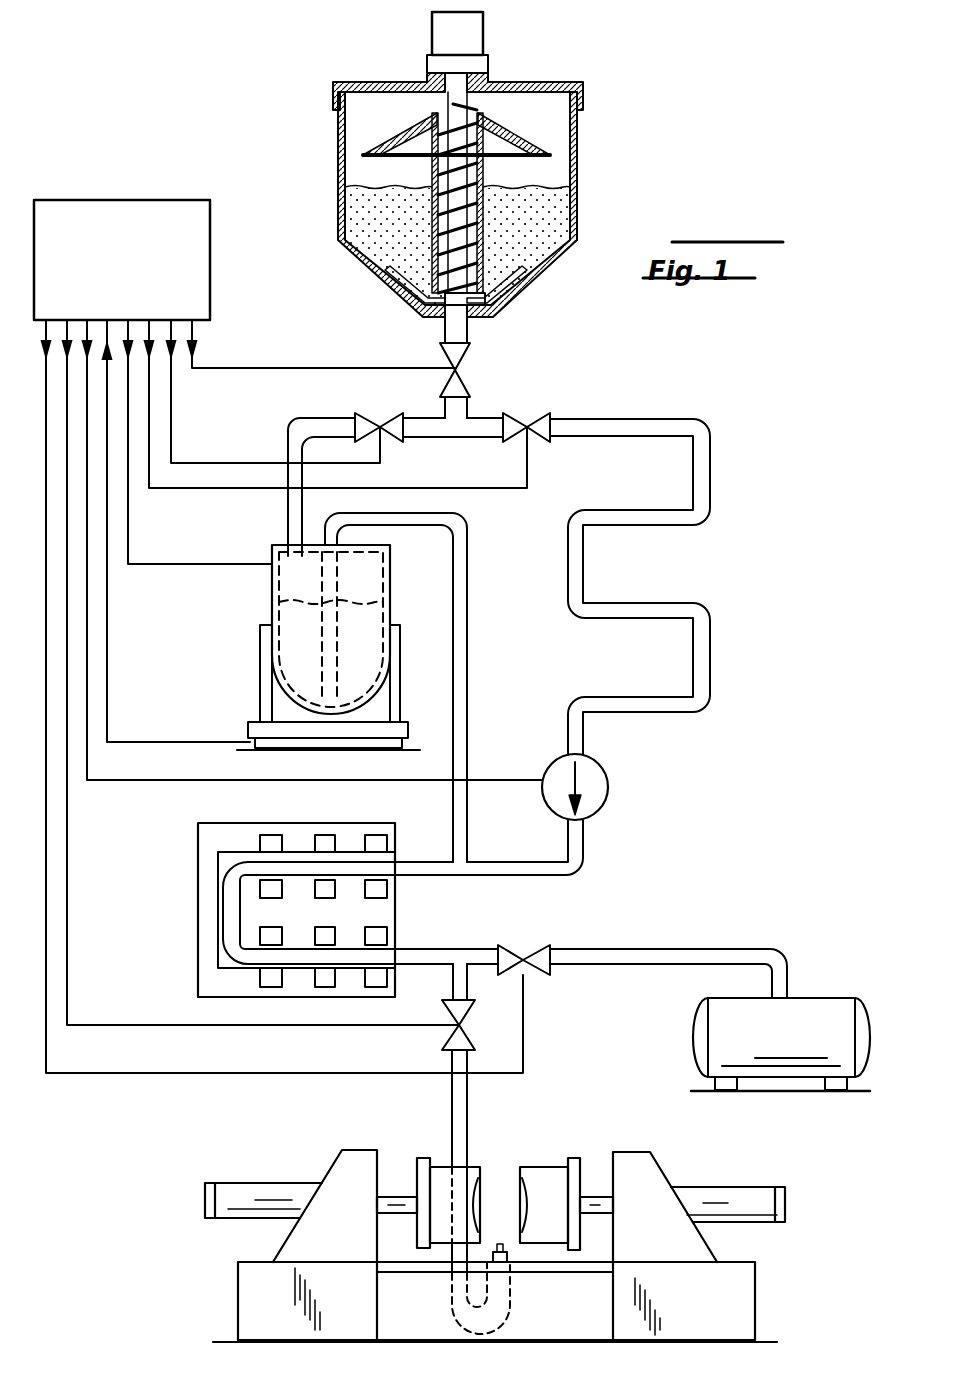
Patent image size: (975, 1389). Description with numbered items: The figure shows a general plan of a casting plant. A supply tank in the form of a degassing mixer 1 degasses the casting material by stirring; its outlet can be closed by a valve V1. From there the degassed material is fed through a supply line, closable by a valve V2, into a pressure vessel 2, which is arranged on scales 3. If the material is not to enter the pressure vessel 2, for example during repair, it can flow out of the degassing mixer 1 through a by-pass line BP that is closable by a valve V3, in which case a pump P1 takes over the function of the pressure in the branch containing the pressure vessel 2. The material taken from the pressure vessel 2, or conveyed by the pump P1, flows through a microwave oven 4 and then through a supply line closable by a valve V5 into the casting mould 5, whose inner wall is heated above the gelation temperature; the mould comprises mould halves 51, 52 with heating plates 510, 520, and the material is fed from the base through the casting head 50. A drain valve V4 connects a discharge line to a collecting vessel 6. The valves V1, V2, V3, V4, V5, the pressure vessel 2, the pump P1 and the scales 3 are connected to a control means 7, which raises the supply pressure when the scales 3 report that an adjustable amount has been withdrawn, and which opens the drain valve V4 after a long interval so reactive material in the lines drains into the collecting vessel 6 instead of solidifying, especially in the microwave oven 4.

The degassing mixer 1 is at (590, 155).
The control means 7 is at (127, 213).
The valve V1 is at (460, 376).
The valve V2 is at (375, 413).
The valve V3 is at (545, 415).
The drain valve V4 is at (540, 947).
The valve V5 is at (463, 1038).
The by-pass line BP is at (705, 483).
The pressure vessel 2 is at (298, 620).
The scales 3 is at (257, 728).
The pump P1 is at (596, 785).
The microwave oven 4 is at (205, 912).
The collecting vessel 6 is at (805, 1007).
The casting mould 5 is at (495, 1223).
The heating plate 520 is at (420, 1182).
The mould half 52 is at (440, 1167).
The mould half 51 is at (536, 1168).
The heating plate 510 is at (578, 1165).
The casting head 50 is at (500, 1248).